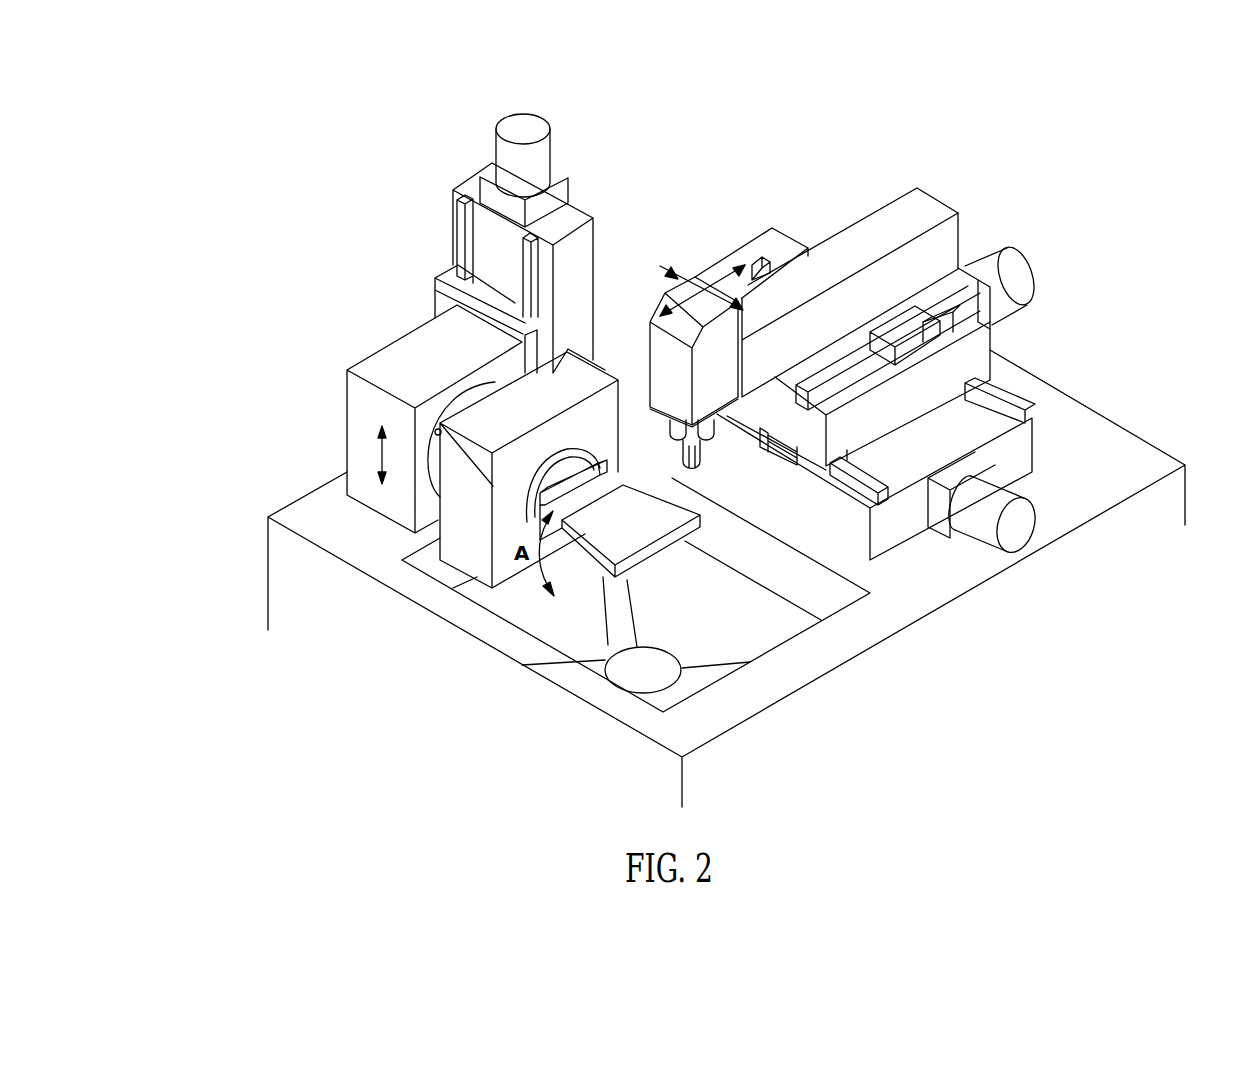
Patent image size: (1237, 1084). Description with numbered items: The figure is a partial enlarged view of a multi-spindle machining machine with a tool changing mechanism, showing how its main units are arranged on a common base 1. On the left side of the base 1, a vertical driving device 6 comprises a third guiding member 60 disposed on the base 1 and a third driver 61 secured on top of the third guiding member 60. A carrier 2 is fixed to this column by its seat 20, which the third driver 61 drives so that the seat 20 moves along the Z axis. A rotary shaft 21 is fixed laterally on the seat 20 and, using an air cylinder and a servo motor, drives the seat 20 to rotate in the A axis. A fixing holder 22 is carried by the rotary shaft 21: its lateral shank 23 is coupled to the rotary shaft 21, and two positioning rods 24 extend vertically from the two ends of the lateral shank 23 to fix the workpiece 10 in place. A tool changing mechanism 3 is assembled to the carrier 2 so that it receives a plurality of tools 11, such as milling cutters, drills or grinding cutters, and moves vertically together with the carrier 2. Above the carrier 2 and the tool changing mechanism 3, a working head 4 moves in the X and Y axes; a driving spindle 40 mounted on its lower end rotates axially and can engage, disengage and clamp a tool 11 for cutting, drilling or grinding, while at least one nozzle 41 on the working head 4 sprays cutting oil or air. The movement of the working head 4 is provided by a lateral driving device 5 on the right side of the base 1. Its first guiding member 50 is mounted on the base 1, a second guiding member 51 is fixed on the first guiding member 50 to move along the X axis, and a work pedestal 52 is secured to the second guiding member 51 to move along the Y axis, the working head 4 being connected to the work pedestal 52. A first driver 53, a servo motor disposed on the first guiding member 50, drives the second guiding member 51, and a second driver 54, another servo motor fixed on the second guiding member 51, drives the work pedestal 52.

The base 1 is at (270, 565).
The carrier 2 is at (466, 628).
The tool changing mechanism 3 is at (447, 542).
The working head 4 is at (655, 340).
The lateral driving device 5 is at (948, 373).
The vertical driving device 6 is at (453, 231).
The workpiece 10 is at (650, 552).
The tool 11 is at (697, 473).
The seat 20 is at (367, 368).
The rotary shaft 21 is at (450, 562).
The fixing holder 22 is at (553, 614).
The lateral shank 23 is at (575, 507).
The positioning rods 24 is at (606, 585).
The driving spindle 40 is at (710, 427).
The nozzle 41 is at (717, 470).
The first guiding member 50 is at (1022, 425).
The second guiding member 51 is at (983, 352).
The work pedestal 52 is at (850, 237).
The first driver 53 is at (1022, 528).
The second driver 54 is at (1014, 263).
The third guiding member 60 is at (452, 206).
The third driver 61 is at (545, 123).